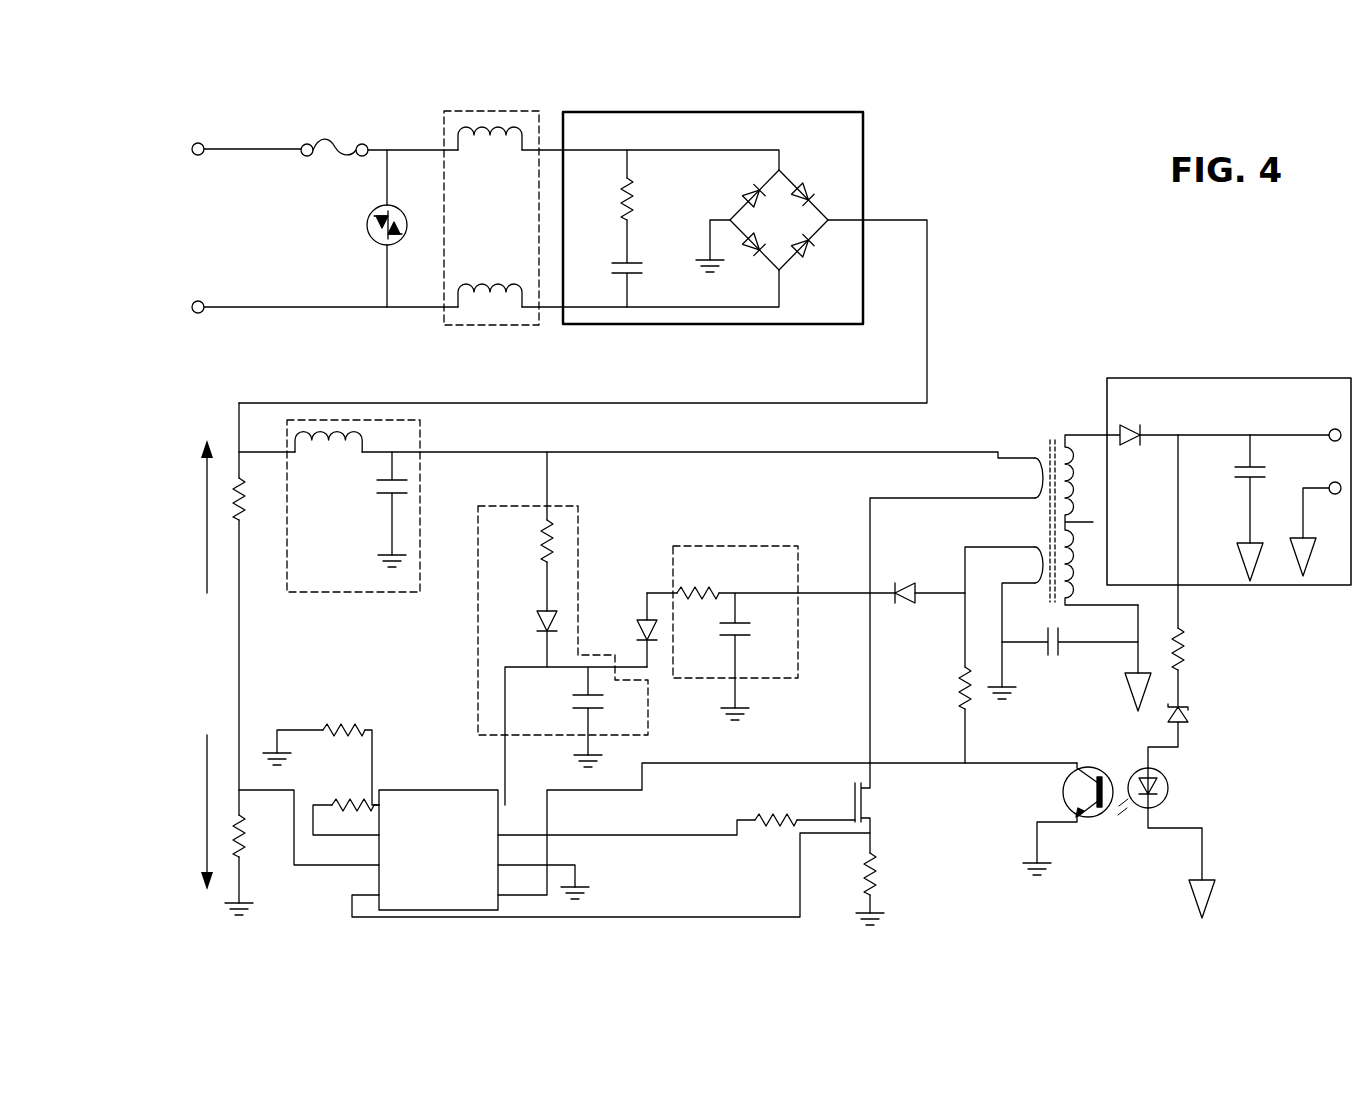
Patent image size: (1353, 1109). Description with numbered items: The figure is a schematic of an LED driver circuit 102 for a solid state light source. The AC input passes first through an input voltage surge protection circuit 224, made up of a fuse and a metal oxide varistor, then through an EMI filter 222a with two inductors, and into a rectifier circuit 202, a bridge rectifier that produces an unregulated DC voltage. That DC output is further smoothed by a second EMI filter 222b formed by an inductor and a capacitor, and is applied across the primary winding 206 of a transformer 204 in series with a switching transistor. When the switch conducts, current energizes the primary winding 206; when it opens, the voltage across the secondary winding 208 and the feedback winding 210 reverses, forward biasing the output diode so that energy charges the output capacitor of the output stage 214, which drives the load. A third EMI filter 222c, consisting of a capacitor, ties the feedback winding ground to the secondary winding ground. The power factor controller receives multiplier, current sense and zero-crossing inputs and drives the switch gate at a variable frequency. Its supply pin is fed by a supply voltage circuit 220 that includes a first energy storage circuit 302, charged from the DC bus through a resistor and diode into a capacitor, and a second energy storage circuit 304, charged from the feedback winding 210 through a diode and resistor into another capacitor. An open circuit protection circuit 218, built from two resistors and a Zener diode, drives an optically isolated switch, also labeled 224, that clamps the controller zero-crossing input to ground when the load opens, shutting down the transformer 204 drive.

The LED driver circuit 102 is at (762, 518).
The rectifier circuit 202 is at (667, 324).
The transformer 204 is at (1100, 450).
The primary winding 206 is at (1031, 475).
The secondary winding 208 is at (1075, 487).
The feedback winding 210 is at (1030, 564).
The output stage 214 is at (1262, 378).
The open circuit protection circuit 218 is at (1270, 757).
The supply voltage circuit 220 is at (436, 686).
The EMI filter 222a is at (492, 325).
The EMI filter 222b is at (342, 592).
The EMI filter 222c is at (1068, 693).
The input voltage surge protection circuit 224 is at (268, 252).
The first energy storage circuit 302 is at (478, 663).
The second energy storage circuit 304 is at (737, 546).